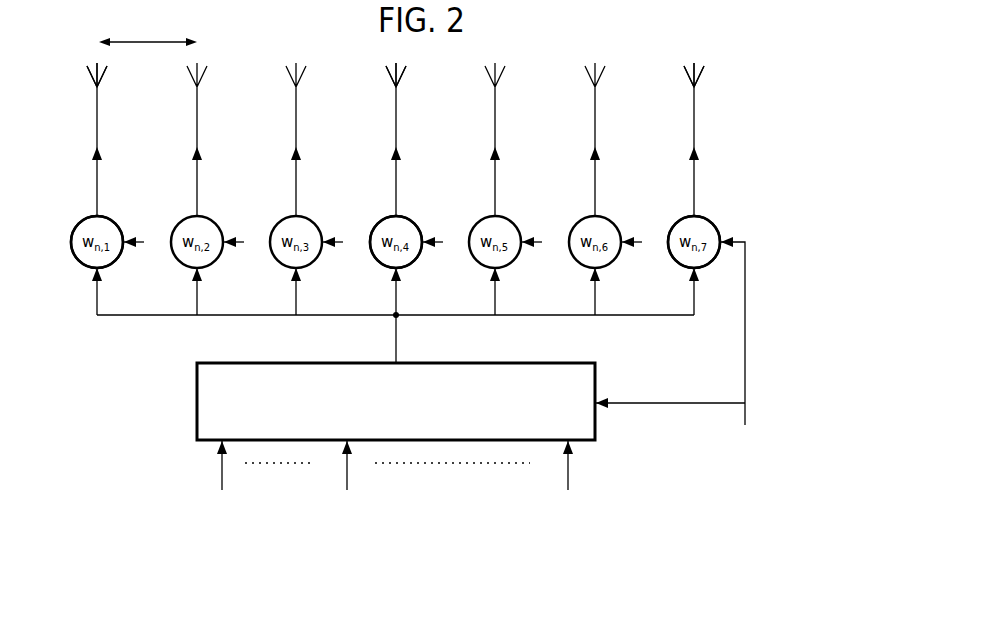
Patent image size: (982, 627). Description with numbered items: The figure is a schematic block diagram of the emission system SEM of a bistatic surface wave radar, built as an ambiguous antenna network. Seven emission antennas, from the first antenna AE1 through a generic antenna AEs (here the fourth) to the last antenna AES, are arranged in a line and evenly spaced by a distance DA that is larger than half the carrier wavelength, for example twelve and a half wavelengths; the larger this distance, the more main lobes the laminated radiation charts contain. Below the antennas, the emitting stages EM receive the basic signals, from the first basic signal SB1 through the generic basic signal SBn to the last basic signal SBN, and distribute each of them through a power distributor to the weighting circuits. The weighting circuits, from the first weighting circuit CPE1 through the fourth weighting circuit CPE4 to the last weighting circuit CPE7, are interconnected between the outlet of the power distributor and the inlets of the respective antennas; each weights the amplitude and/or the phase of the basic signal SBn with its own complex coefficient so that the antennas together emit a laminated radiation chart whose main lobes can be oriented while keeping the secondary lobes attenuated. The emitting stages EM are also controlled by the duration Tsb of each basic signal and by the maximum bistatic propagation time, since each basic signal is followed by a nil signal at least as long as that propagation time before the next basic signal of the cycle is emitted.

The first emission antenna AE1 is at (93, 118).
The emission antenna s AEs is at (393, 120).
The last emission antenna AES is at (697, 128).
The first weighting circuit CPE1 is at (72, 247).
The fourth weighting circuit CPE4 is at (364, 228).
The last weighting circuit CPE7 is at (740, 195).
The emitting stages EM is at (196, 410).
The emission system SEM is at (92, 416).
The antenna spacing distance DA is at (148, 30).
The basic signal n SBn is at (386, 424).
The first basic signal SB1 is at (223, 481).
The last basic signal SBN is at (569, 481).
The basic signal duration Tsb is at (693, 348).